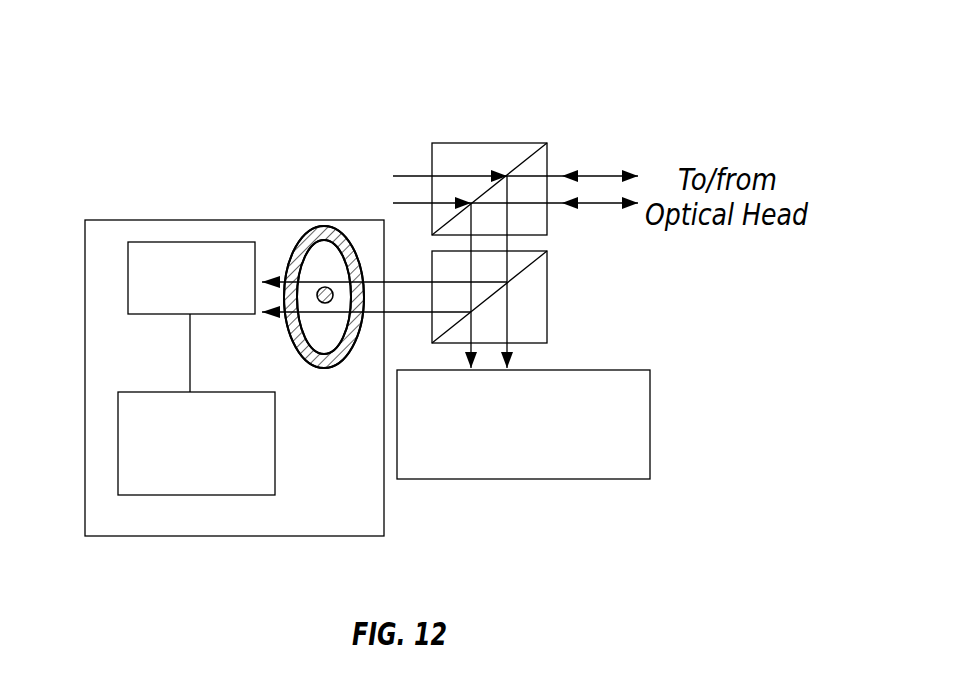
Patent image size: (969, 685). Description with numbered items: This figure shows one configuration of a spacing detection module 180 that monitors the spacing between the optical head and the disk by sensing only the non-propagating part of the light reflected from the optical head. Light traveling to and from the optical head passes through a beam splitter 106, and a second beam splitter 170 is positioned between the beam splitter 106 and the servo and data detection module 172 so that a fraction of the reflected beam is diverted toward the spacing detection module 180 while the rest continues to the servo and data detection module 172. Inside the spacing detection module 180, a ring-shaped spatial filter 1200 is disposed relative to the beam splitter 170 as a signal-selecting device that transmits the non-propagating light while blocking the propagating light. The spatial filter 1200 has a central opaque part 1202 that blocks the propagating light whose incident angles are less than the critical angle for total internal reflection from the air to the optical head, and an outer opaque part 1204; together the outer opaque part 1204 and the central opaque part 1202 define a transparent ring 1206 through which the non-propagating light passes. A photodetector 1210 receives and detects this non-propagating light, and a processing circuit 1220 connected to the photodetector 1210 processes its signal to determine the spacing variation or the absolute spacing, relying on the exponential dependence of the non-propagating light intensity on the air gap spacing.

The beam splitter 106 is at (488, 143).
The beam splitter 170 is at (549, 297).
The servo and data detection module 172 is at (515, 480).
The spacing detection module 180 is at (317, 537).
The ring-shaped spatial filter 1200 is at (292, 245).
The central opaque part 1202 is at (325, 287).
The outer opaque part 1204 is at (352, 348).
The transparent ring 1206 is at (303, 322).
The photodetector 1210 is at (173, 315).
The processing circuit 1220 is at (198, 496).